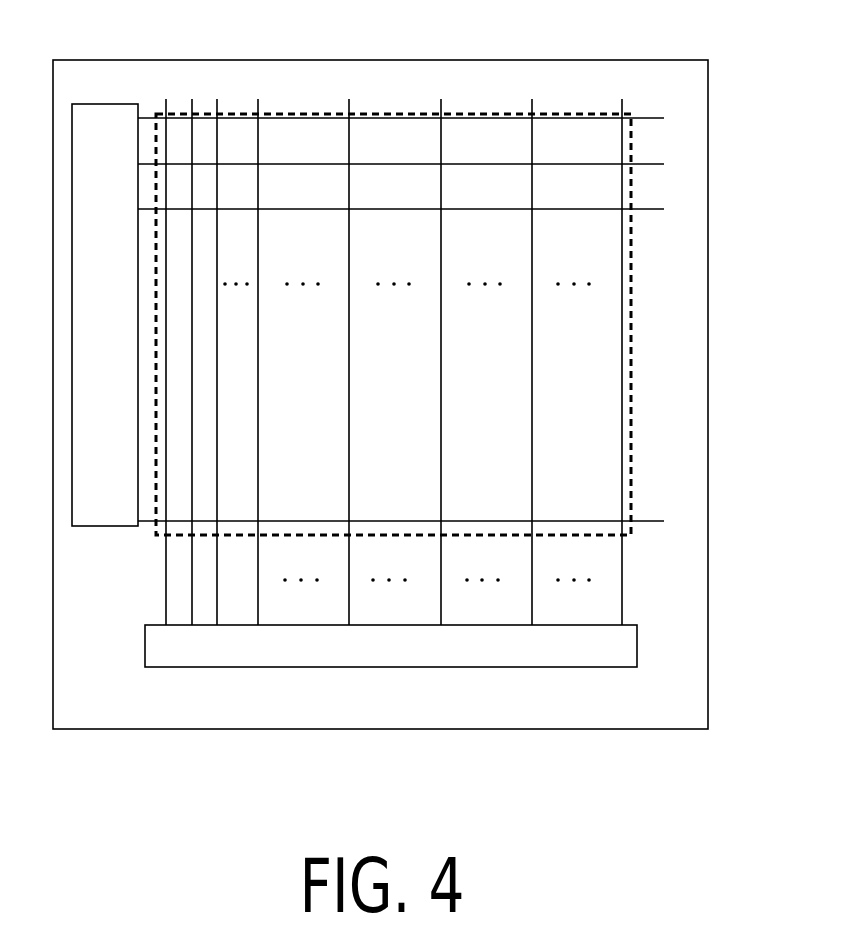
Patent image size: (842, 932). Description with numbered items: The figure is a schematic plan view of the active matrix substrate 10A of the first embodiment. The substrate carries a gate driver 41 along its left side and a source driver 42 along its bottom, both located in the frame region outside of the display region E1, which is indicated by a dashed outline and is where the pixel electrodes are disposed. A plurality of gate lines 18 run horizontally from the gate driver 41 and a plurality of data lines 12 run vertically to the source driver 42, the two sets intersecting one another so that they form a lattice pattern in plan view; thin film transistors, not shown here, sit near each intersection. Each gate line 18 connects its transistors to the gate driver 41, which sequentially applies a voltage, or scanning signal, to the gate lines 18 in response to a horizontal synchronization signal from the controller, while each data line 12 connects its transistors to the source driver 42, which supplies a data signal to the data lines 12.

The active matrix substrate 10A is at (401, 57).
The data line 12 is at (167, 106).
The gate line 18 is at (147, 117).
The gate driver 41 is at (97, 104).
The source driver 42 is at (547, 651).
The display region E1 is at (495, 112).